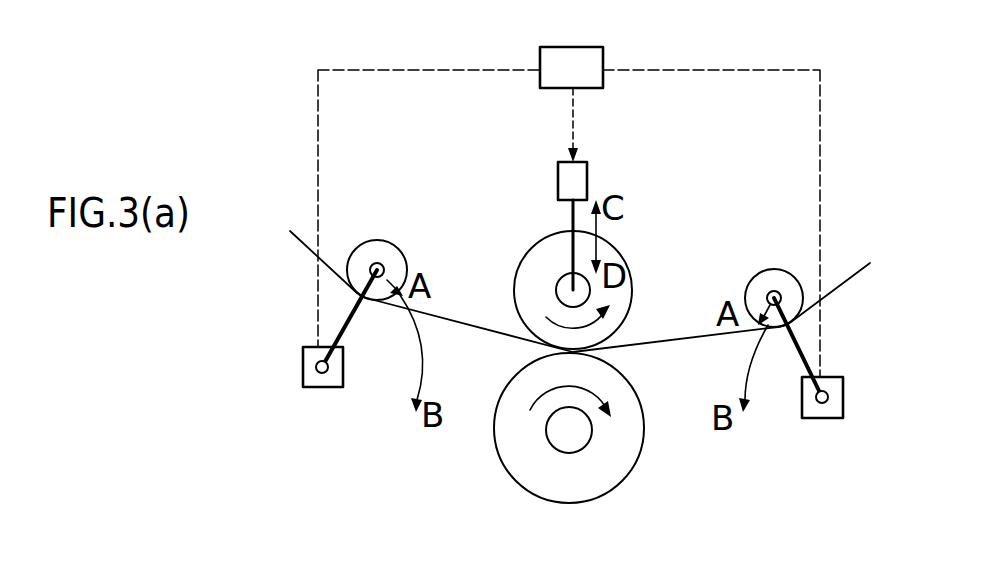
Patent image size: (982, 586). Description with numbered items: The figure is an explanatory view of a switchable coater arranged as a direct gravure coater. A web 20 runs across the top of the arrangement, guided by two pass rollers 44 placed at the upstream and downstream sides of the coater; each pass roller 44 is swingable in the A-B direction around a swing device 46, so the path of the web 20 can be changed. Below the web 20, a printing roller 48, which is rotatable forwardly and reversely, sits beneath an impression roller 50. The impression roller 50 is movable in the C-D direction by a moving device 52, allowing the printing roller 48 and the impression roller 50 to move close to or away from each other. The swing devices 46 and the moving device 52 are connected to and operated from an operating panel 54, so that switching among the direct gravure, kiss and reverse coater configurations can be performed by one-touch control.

The web 20 is at (300, 243).
The pass rollers 44 is at (382, 248).
The swing devices 46 is at (330, 387).
The printing roller 48 is at (617, 470).
The impression roller 50 is at (620, 302).
The moving device 52 is at (578, 182).
The operating panel 54 is at (595, 53).